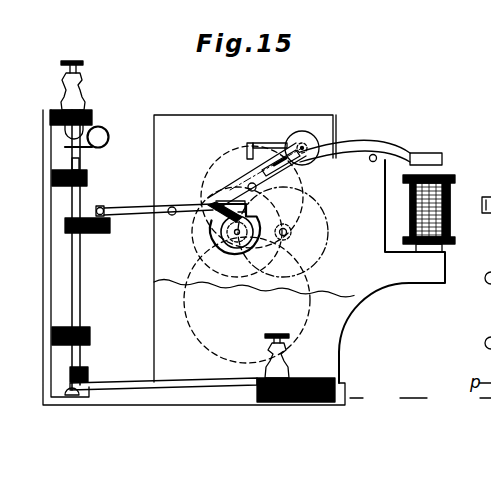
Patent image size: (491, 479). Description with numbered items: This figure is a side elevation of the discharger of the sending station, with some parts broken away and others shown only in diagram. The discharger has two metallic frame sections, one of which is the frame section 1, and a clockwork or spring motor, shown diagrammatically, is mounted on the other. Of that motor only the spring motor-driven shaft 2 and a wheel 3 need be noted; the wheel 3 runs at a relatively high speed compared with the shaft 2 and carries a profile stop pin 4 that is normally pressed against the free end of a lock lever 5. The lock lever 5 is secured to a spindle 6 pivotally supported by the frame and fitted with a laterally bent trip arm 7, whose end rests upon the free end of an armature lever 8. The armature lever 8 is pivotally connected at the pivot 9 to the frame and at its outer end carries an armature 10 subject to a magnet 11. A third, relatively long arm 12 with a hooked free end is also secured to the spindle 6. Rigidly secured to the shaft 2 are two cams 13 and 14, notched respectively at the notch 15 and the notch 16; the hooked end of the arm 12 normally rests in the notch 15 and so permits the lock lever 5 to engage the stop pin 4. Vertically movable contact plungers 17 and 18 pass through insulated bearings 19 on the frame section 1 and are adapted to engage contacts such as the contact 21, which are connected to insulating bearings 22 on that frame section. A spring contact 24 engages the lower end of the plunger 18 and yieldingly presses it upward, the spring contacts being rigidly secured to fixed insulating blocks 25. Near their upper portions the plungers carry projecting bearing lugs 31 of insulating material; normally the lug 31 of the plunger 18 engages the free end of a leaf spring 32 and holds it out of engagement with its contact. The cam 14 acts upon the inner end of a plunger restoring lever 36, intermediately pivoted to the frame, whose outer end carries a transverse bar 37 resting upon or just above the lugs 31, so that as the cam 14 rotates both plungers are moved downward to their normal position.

The frame section 1 is at (43, 110).
The spring motor-driven shaft 2 is at (300, 262).
The wheel 3 is at (226, 133).
The profile stop pin 4 is at (249, 143).
The lock lever 5 is at (268, 148).
The spindle 6 is at (306, 135).
The trip arm 7 is at (292, 222).
The armature lever 8 is at (392, 146).
The pivot 9 is at (373, 154).
The armature 10 is at (442, 158).
The magnet 11 is at (450, 187).
The long arm 12 is at (185, 108).
The cam 13 is at (220, 244).
The cam 14 is at (232, 256).
The notch 15 is at (211, 222).
The notch 16 is at (212, 250).
The contact plunger 17 is at (90, 336).
The contact plunger 18 is at (82, 298).
The insulated bearing 19 is at (88, 178).
The contact 21 is at (103, 133).
The insulating bearing 22 is at (88, 113).
The spring contact 24 is at (135, 388).
The insulating block 25 is at (281, 404).
The bearing lug 31 is at (88, 212).
The leaf spring 32 is at (104, 231).
The plunger restoring lever 36 is at (170, 206).
The transverse bar 37 is at (104, 209).